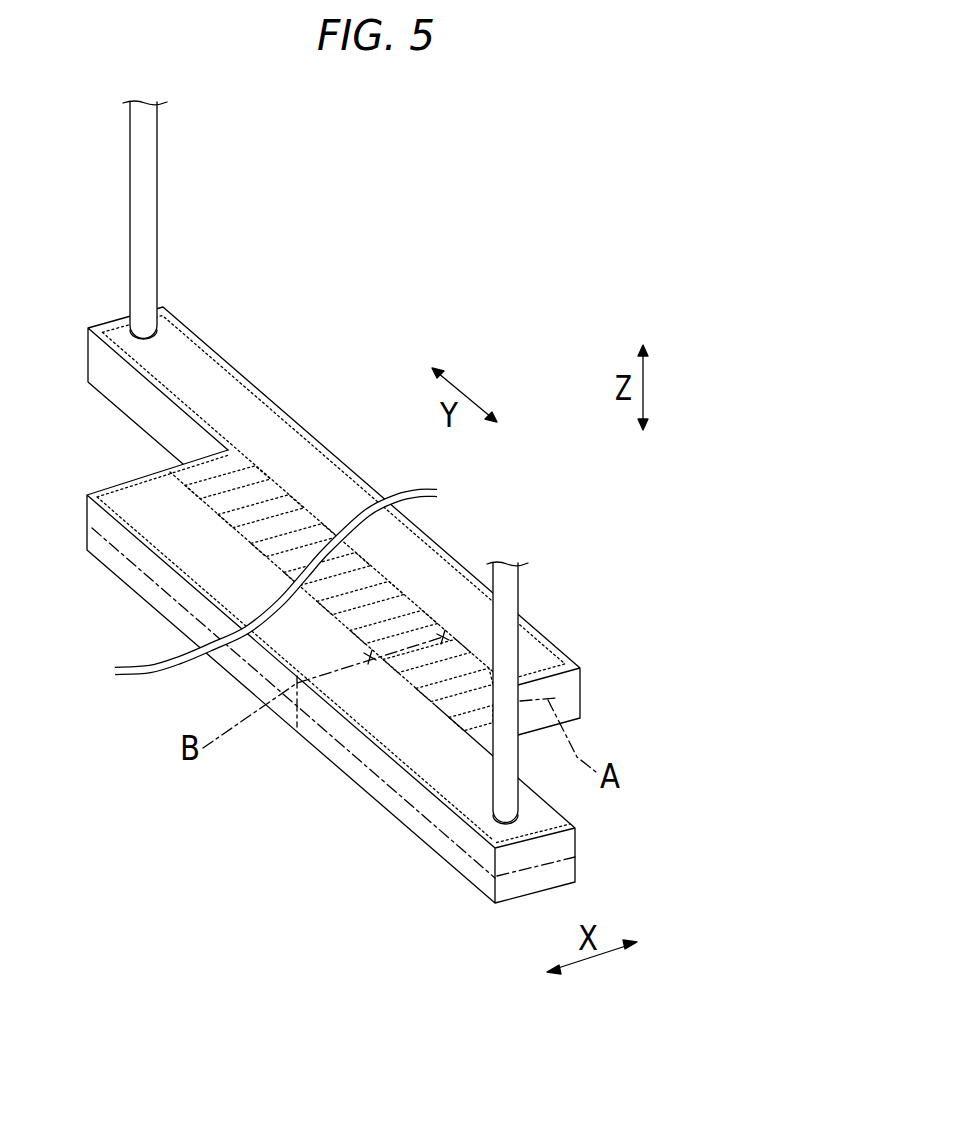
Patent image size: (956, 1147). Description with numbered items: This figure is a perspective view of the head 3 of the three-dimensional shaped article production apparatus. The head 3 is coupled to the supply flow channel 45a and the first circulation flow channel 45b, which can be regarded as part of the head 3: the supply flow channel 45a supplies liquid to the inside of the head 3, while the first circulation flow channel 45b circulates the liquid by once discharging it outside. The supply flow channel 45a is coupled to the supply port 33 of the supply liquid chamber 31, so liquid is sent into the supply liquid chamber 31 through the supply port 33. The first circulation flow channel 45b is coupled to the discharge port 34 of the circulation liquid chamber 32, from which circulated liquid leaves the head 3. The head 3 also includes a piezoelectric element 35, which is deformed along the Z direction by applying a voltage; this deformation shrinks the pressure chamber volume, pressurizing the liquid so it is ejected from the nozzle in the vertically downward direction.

The head 3 is at (370, 502).
The supply liquid chamber 31 is at (225, 393).
The circulation liquid chamber 32 is at (380, 735).
The supply port 33 is at (143, 334).
The discharge port 34 is at (511, 800).
The piezoelectric element 35 is at (207, 475).
The supply flow channel 45a is at (150, 143).
The first circulation flow channel 45b is at (503, 622).